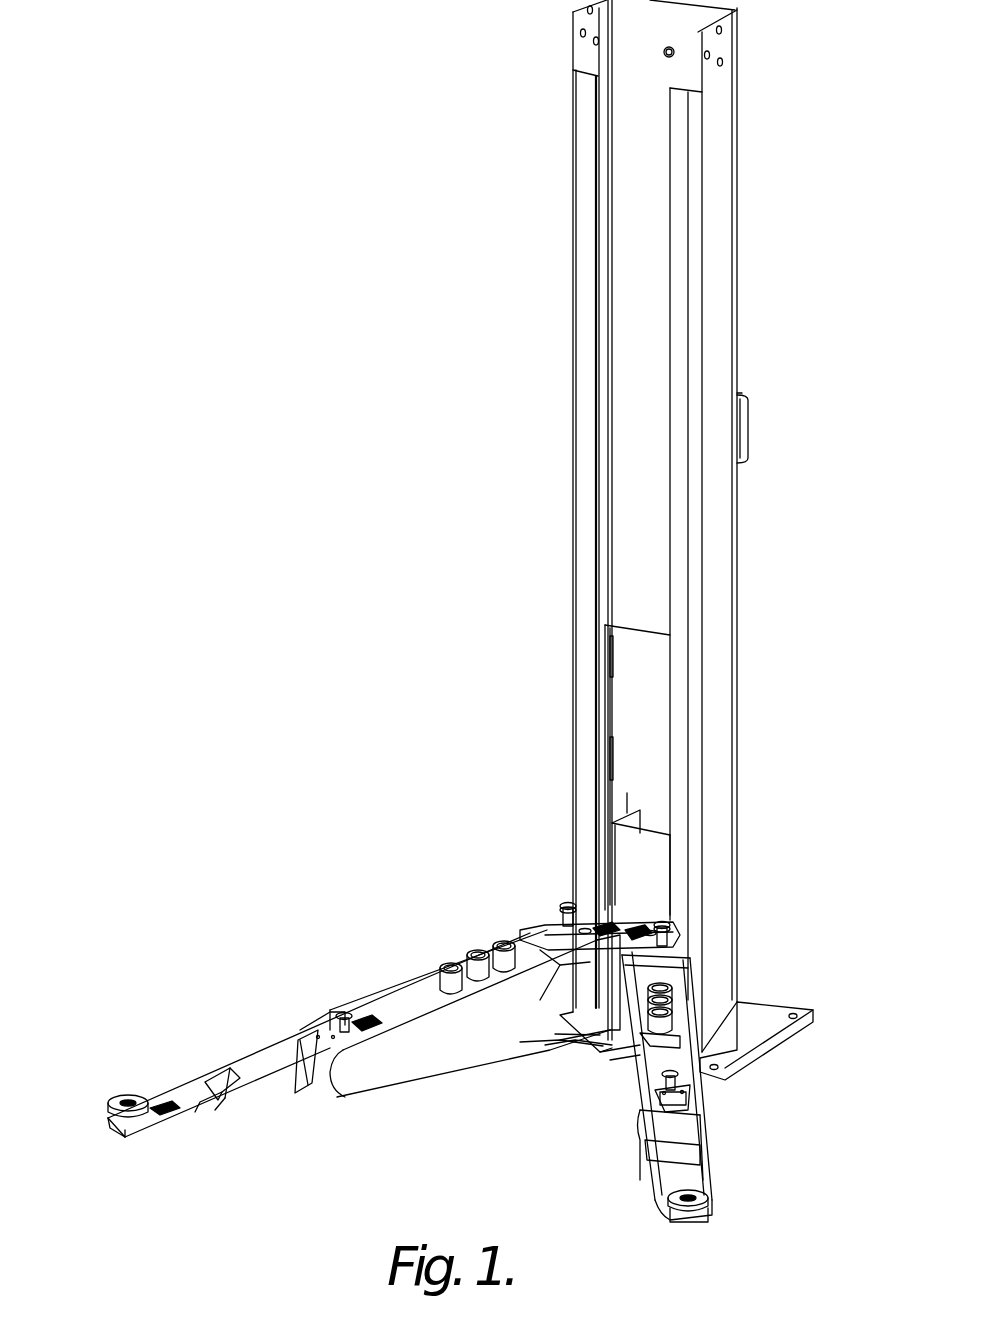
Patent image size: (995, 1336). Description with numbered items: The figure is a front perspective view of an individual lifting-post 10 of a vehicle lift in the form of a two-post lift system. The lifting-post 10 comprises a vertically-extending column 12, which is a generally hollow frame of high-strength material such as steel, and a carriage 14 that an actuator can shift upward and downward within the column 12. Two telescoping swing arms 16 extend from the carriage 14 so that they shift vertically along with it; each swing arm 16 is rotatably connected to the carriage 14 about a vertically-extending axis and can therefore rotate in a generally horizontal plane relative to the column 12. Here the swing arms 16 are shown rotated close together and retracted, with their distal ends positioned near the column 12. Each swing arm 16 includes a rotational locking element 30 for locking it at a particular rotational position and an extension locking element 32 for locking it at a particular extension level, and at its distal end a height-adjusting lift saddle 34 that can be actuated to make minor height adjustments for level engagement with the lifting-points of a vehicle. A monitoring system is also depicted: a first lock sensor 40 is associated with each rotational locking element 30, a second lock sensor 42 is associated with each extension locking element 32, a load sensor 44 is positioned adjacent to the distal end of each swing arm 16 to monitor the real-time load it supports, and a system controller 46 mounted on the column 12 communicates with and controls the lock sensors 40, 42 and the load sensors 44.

The lifting-post 10 is at (430, 158).
The column 12 is at (715, 176).
The carriage 14 is at (635, 850).
The swing arm 16 is at (385, 1078).
The rotational locking element 30 is at (565, 905).
The extension locking element 32 is at (345, 1014).
The height-adjusting lift saddle 34 is at (128, 1100).
The first lock sensor 40 is at (604, 922).
The second lock sensor 42 is at (357, 1022).
The load sensor 44 is at (160, 1105).
The system controller 46 is at (750, 422).